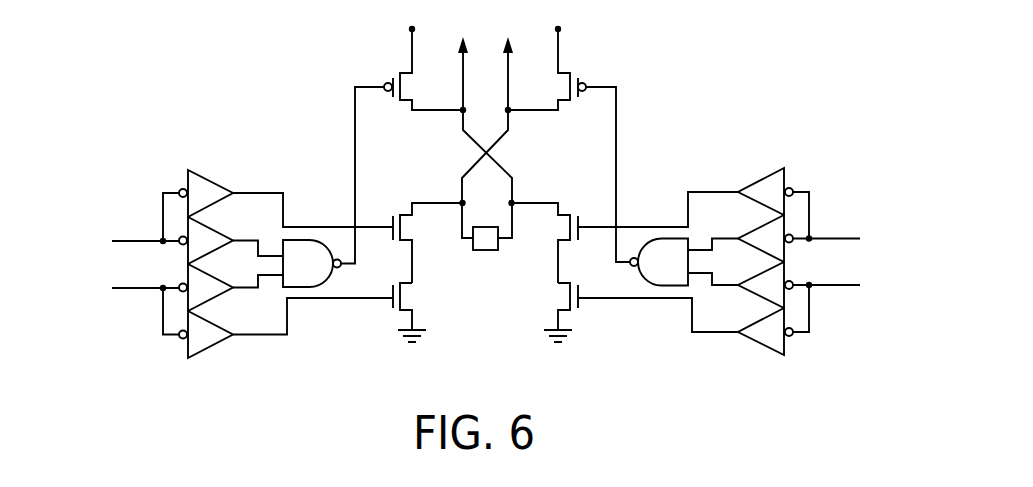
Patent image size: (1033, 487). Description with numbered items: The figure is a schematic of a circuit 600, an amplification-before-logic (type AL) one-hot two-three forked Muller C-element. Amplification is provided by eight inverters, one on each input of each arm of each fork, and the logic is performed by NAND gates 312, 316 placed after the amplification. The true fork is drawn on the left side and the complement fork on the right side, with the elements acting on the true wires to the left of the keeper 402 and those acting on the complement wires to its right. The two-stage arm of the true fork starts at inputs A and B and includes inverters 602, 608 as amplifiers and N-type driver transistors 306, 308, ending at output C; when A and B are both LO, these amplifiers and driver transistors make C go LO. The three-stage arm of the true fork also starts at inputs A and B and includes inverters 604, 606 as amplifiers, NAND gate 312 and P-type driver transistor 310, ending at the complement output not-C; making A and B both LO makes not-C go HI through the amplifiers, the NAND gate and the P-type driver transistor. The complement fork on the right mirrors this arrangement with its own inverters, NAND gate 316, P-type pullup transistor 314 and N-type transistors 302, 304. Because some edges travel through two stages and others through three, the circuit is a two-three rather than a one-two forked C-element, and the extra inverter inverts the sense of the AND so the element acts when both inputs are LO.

The MCE circuit 600 is at (465, 194).
The inverter 602 is at (286, 178).
The inverter 604 is at (231, 230).
The inverter 606 is at (155, 264).
The inverter 608 is at (286, 325).
The NAND gate 312 is at (333, 225).
The NAND gate 316 is at (637, 222).
The P-type pullup transistor 310 is at (406, 65).
The P-type pullup transistor 314 is at (563, 67).
The N-type driver transistor 306 is at (412, 224).
The N-type driver transistor 308 is at (394, 290).
The N-type transistor 302 is at (563, 224).
The N-type transistor 304 is at (582, 332).
The keeper 402 is at (511, 258).